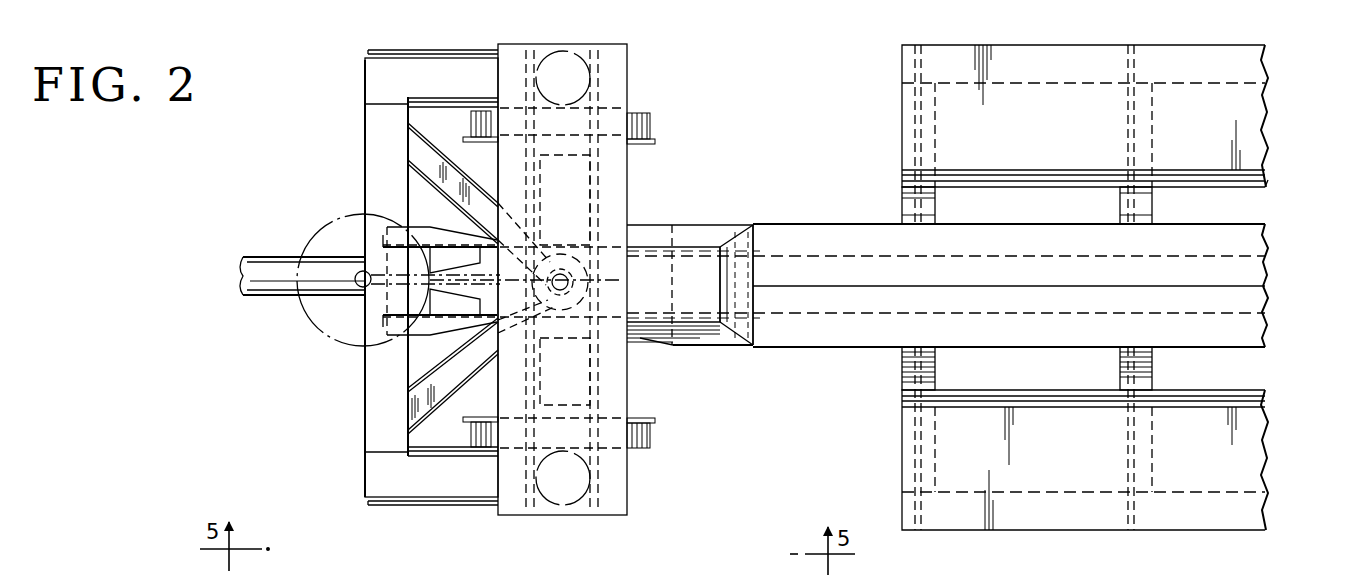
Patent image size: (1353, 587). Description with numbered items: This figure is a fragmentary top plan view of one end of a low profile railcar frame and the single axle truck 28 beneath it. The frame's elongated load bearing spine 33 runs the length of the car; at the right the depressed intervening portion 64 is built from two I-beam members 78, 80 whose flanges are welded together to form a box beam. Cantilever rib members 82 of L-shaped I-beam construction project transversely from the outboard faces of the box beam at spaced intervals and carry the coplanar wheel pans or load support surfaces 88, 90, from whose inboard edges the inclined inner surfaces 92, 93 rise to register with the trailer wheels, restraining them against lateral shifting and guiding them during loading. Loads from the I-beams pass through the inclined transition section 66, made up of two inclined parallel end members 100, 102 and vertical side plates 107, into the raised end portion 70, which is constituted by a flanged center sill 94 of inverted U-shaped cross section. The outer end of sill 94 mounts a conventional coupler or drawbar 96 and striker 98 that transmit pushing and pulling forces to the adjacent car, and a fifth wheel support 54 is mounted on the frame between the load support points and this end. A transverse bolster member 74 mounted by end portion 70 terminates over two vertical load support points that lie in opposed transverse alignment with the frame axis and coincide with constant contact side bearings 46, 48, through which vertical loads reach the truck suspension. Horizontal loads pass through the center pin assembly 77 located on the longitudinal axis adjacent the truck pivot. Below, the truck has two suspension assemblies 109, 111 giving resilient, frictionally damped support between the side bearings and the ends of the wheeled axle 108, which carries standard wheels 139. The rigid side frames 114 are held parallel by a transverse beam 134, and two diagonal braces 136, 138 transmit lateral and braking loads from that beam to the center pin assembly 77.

The single axle truck 28 is at (340, 459).
The load bearing spine 33 is at (852, 208).
The constant contact side bearing 46 is at (580, 500).
The constant contact side bearing 48 is at (572, 60).
The fifth wheel support 54 is at (320, 228).
The depressed intervening portion 64 is at (1296, 190).
The transition section 66 is at (714, 356).
The raised end portion 70 is at (322, 352).
The bolster member 74 is at (628, 163).
The center pin assembly 77 is at (588, 265).
The I-beam member 78 is at (1258, 270).
The I-beam member 80 is at (1258, 326).
The cantilever rib member 82 is at (937, 200).
The load support surface 88 is at (1094, 112).
The load support surface 90 is at (1072, 474).
The inclined inner surface 92 is at (1048, 170).
The inclined inner surface 93 is at (1068, 398).
The center sill 94 is at (645, 340).
The coupler 96 is at (265, 292).
The striker 98 is at (358, 322).
The inclined end member 100 is at (682, 224).
The inclined end member 102 is at (755, 285).
The vertical side plate 107 is at (704, 312).
The wheeled truck axle 108 is at (588, 392).
The suspension assembly 109 is at (479, 49).
The suspension assembly 111 is at (458, 508).
The side frame 114 is at (400, 78).
The transverse beam 134 is at (378, 142).
The diagonal brace 136 is at (430, 127).
The diagonal brace 138 is at (432, 382).
The wheel 139 is at (640, 112).